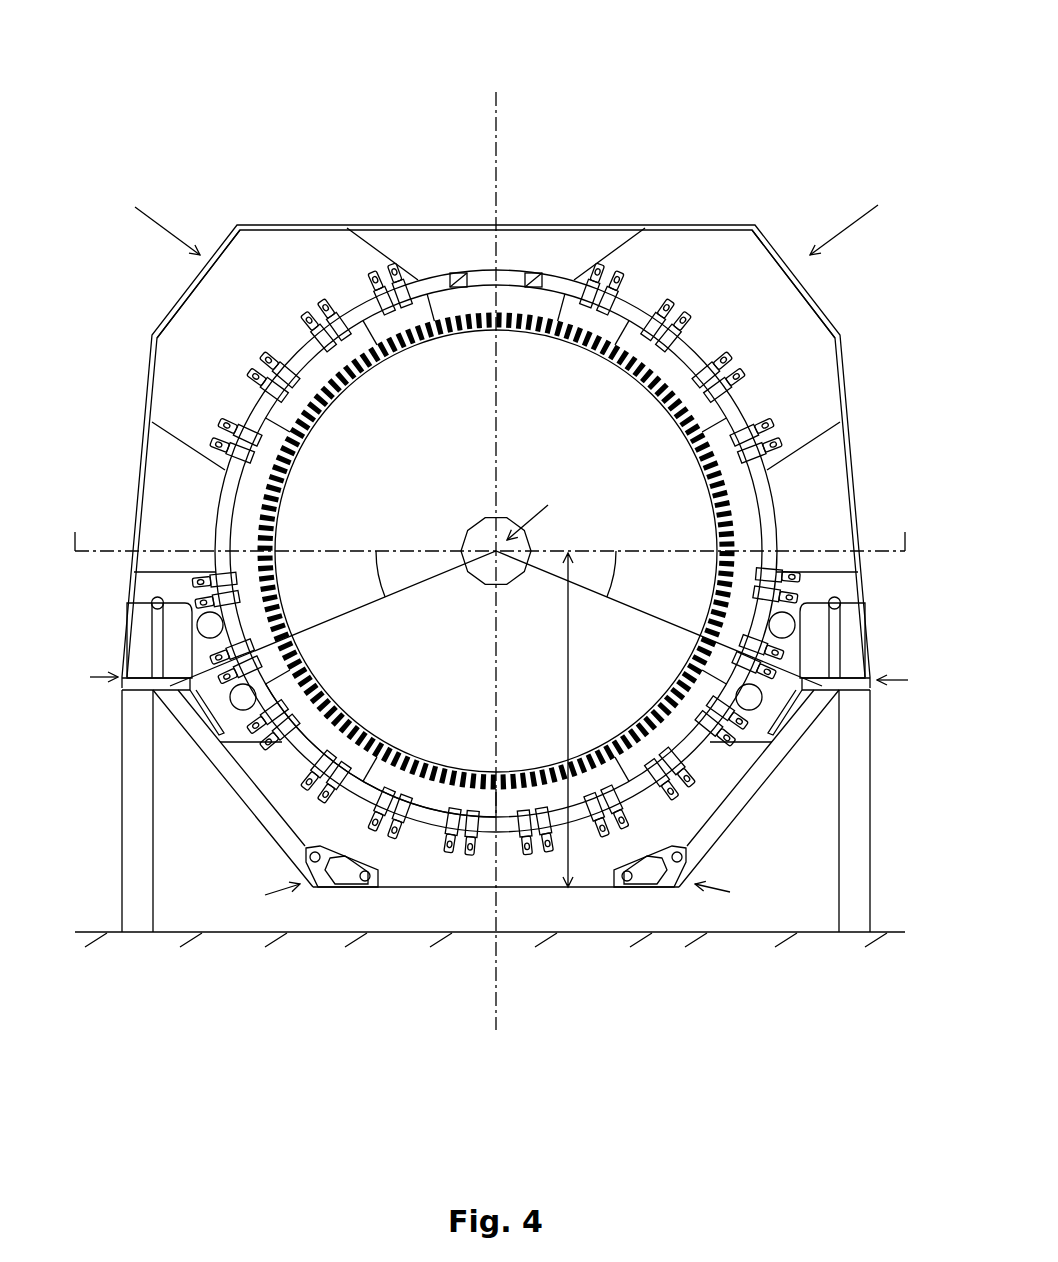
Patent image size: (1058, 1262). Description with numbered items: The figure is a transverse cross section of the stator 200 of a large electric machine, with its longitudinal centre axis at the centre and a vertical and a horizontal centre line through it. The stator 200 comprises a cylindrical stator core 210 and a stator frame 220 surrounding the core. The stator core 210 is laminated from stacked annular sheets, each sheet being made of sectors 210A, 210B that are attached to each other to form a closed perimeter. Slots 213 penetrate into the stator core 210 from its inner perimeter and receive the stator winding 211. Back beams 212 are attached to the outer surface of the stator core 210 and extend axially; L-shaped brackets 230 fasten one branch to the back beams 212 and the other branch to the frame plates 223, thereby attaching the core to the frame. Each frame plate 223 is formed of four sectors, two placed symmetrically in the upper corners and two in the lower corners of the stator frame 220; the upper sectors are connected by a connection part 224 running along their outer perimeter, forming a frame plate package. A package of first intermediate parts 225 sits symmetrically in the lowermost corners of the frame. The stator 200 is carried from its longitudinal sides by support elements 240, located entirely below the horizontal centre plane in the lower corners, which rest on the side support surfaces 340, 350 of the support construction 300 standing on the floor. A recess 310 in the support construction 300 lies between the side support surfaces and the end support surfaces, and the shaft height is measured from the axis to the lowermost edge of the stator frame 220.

The stator 200 is at (283, 100).
The stator core 210 is at (443, 288).
The sector 210A is at (345, 740).
The sector 210B is at (430, 778).
The stator winding 211 is at (660, 385).
The back beam 212 is at (533, 288).
The slot 213 is at (668, 405).
The stator frame 220 is at (655, 200).
The frame plate 223 is at (277, 247).
The connection part 224 is at (180, 303).
The first intermediate part 225 is at (365, 882).
The L-shaped bracket 230 is at (215, 425).
The support element 240 is at (150, 637).
The support construction 300 is at (135, 808).
The recess 310 is at (228, 873).
The side support surface 340 is at (842, 690).
The side support surface 350 is at (150, 690).